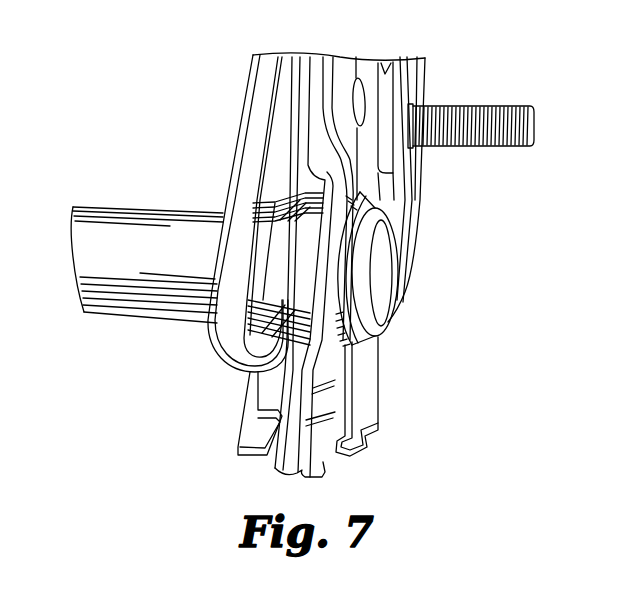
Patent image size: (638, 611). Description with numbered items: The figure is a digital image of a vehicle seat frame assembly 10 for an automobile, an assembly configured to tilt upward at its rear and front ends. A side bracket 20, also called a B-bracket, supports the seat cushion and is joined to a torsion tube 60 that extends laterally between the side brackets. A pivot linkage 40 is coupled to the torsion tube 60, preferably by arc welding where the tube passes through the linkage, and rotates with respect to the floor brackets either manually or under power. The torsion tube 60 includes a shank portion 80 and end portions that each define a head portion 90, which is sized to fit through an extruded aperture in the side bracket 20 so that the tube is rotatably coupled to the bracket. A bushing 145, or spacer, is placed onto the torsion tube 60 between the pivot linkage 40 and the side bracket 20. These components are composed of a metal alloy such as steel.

The vehicle seat frame assembly 10 is at (502, 184).
The side bracket 20 is at (315, 442).
The pivot linkage 40 is at (258, 100).
The torsion tube 60 is at (157, 207).
The shank portion 80 is at (177, 261).
The head portion 90 is at (365, 232).
The bushing 145 is at (280, 300).